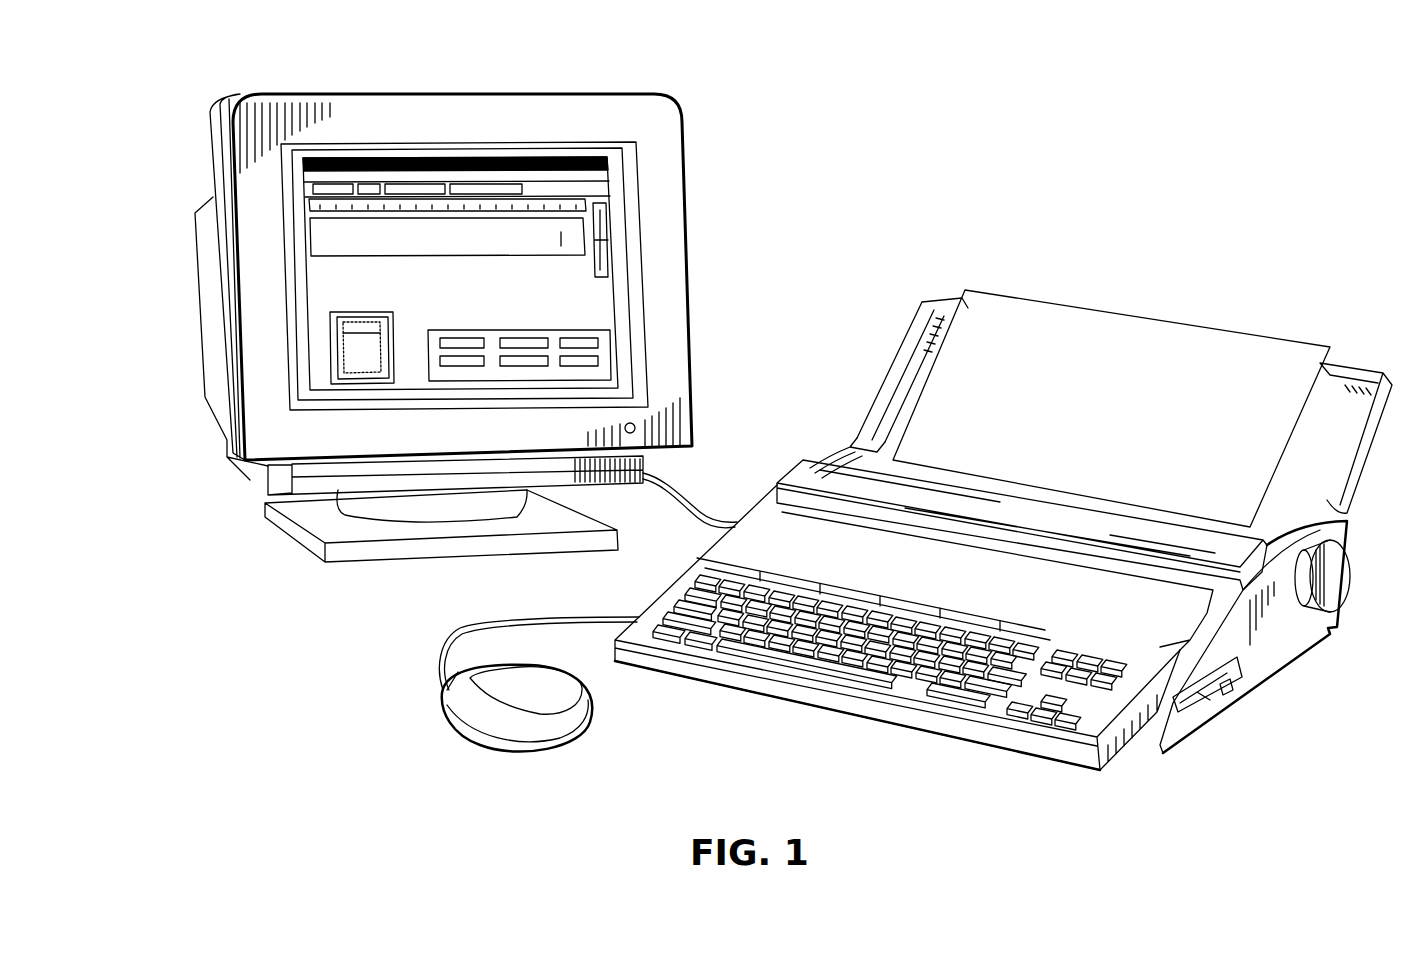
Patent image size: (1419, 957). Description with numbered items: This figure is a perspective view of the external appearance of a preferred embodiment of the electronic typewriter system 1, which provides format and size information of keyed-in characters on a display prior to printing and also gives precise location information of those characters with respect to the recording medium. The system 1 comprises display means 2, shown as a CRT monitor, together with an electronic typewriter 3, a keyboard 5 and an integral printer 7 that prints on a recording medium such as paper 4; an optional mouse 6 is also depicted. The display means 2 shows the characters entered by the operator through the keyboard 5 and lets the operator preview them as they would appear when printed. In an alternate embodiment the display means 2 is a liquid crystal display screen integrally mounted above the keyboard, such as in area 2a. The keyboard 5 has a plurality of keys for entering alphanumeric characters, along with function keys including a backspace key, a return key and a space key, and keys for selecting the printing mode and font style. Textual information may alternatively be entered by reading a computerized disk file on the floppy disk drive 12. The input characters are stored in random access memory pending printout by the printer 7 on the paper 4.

The electronic typewriter system 1 is at (1025, 127).
The display means 2 is at (668, 143).
The area 2a is at (778, 527).
The electronic typewriter 3 is at (939, 305).
The paper 4 is at (1280, 355).
The keyboard 5 is at (925, 690).
The mouse 6 is at (480, 713).
The integral printer 7 is at (915, 458).
The floppy disk drive 12 is at (1212, 700).